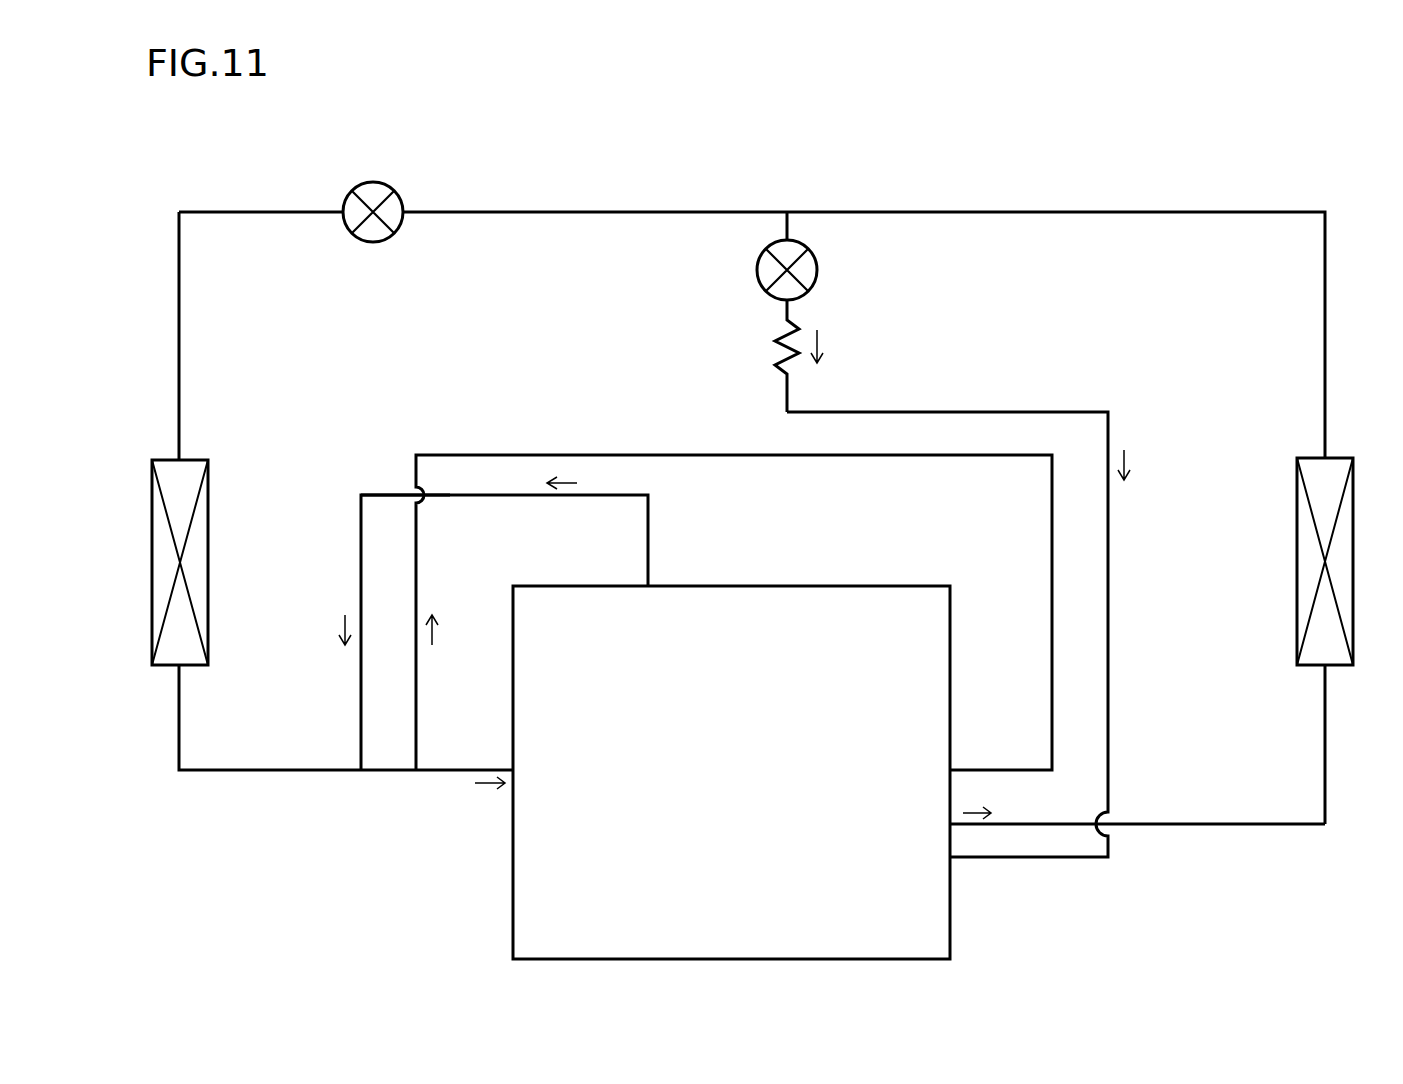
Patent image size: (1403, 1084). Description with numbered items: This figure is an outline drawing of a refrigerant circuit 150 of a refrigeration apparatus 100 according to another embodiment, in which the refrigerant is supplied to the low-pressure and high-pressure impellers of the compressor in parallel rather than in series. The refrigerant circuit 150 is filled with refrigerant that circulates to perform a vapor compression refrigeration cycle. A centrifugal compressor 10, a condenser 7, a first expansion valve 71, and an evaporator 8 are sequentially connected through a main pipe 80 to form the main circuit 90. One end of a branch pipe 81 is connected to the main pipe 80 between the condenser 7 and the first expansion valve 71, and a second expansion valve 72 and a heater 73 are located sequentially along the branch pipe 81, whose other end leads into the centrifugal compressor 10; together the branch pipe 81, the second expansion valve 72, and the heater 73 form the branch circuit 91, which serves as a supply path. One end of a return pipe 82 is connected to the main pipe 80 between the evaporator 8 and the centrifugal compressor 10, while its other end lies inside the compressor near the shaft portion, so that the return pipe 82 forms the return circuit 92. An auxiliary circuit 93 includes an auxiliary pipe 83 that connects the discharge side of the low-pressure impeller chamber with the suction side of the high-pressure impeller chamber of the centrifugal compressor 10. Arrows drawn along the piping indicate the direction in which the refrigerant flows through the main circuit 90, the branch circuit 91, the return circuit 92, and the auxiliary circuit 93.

The condenser 7 is at (1352, 543).
The evaporator 8 is at (153, 543).
The centrifugal compressor 10 is at (932, 578).
The first expansion valve 71 is at (372, 184).
The second expansion valve 72 is at (818, 272).
The heater 73 is at (780, 348).
The main pipe 80 is at (517, 211).
The branch pipe 81 is at (906, 412).
The return pipe 82 is at (358, 523).
The auxiliary pipe 83 is at (490, 453).
The main circuit 90 is at (637, 202).
The branch circuit 91 is at (979, 404).
The return circuit 92 is at (388, 479).
The auxiliary circuit 93 is at (565, 447).
The refrigeration apparatus 100 is at (1305, 180).
The refrigerant circuit 150 is at (1120, 202).